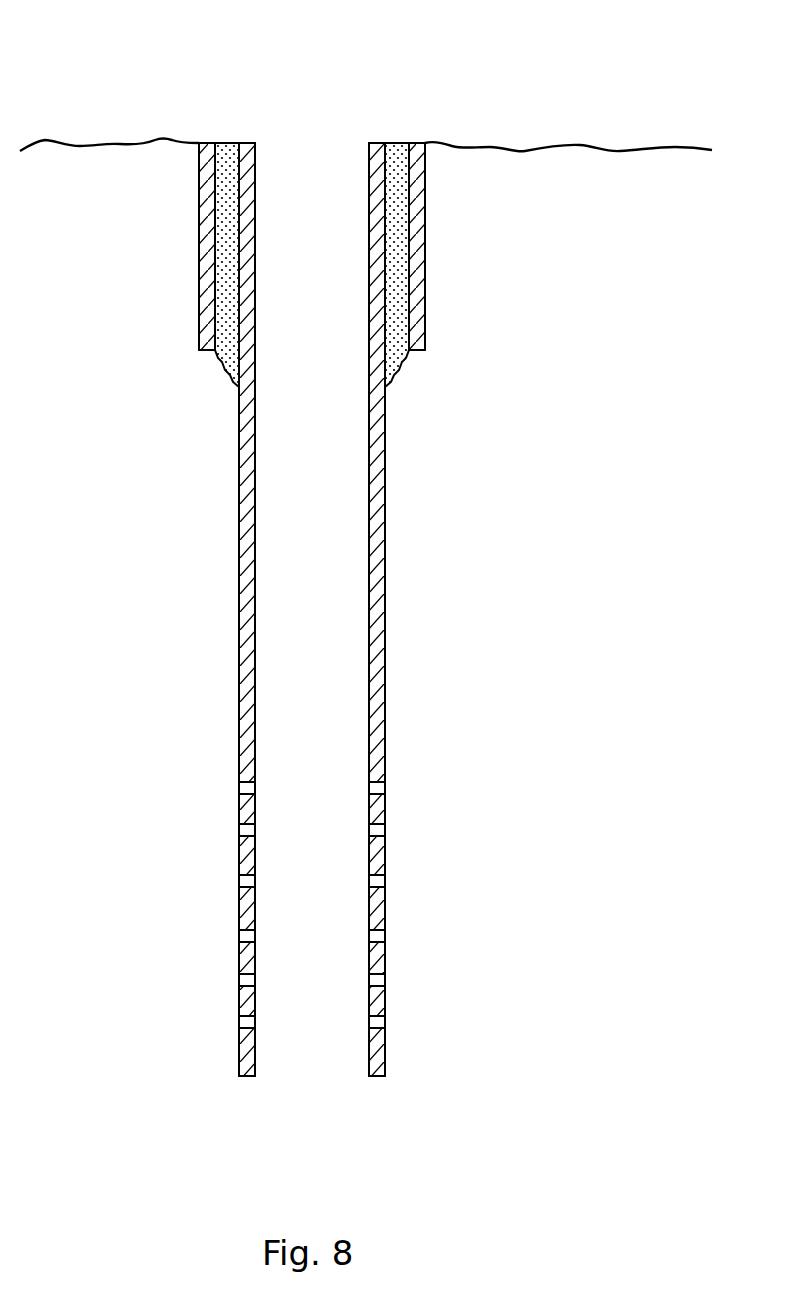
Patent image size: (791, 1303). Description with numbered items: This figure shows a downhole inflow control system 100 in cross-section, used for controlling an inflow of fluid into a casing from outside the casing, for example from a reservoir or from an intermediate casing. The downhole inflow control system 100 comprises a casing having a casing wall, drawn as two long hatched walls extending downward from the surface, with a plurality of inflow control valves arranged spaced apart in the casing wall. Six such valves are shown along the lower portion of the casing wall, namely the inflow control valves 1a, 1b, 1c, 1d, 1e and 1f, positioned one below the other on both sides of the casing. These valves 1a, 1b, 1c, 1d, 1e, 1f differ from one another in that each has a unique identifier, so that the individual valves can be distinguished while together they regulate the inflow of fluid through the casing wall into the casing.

The downhole inflow control system 100 is at (97, 95).
The inflow control valve 1a is at (238, 787).
The inflow control valve 1b is at (238, 830).
The inflow control valve 1c is at (238, 884).
The inflow control valve 1d is at (238, 938).
The inflow control valve 1e is at (238, 982).
The inflow control valve 1f is at (238, 1026).